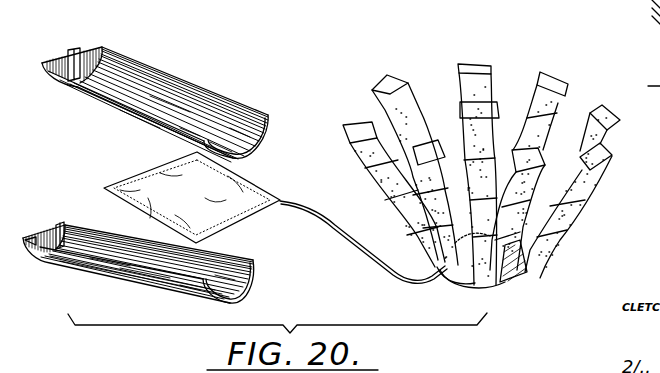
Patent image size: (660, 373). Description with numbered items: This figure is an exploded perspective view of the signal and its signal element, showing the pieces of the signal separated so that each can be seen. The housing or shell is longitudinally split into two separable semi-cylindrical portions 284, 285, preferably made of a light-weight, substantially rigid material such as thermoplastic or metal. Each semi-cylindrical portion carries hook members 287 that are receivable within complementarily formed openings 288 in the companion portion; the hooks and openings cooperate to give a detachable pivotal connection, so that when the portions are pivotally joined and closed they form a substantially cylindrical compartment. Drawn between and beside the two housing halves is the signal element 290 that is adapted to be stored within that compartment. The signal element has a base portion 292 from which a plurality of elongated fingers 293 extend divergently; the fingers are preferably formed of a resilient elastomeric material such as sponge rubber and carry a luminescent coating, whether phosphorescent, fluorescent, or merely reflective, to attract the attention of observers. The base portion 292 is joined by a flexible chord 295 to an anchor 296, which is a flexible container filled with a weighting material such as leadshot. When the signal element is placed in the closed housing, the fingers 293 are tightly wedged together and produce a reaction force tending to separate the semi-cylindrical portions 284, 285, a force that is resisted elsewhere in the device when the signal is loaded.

The semi-cylindrical portion 284 is at (172, 73).
The semi-cylindrical portion 285 is at (98, 271).
The hook member 287 is at (79, 82).
The opening 288 is at (97, 50).
The signal element 290 is at (496, 175).
The base portion 292 is at (518, 279).
The elongated fingers 293 is at (607, 108).
The flexible chord 295 is at (340, 232).
The anchor 296 is at (247, 202).